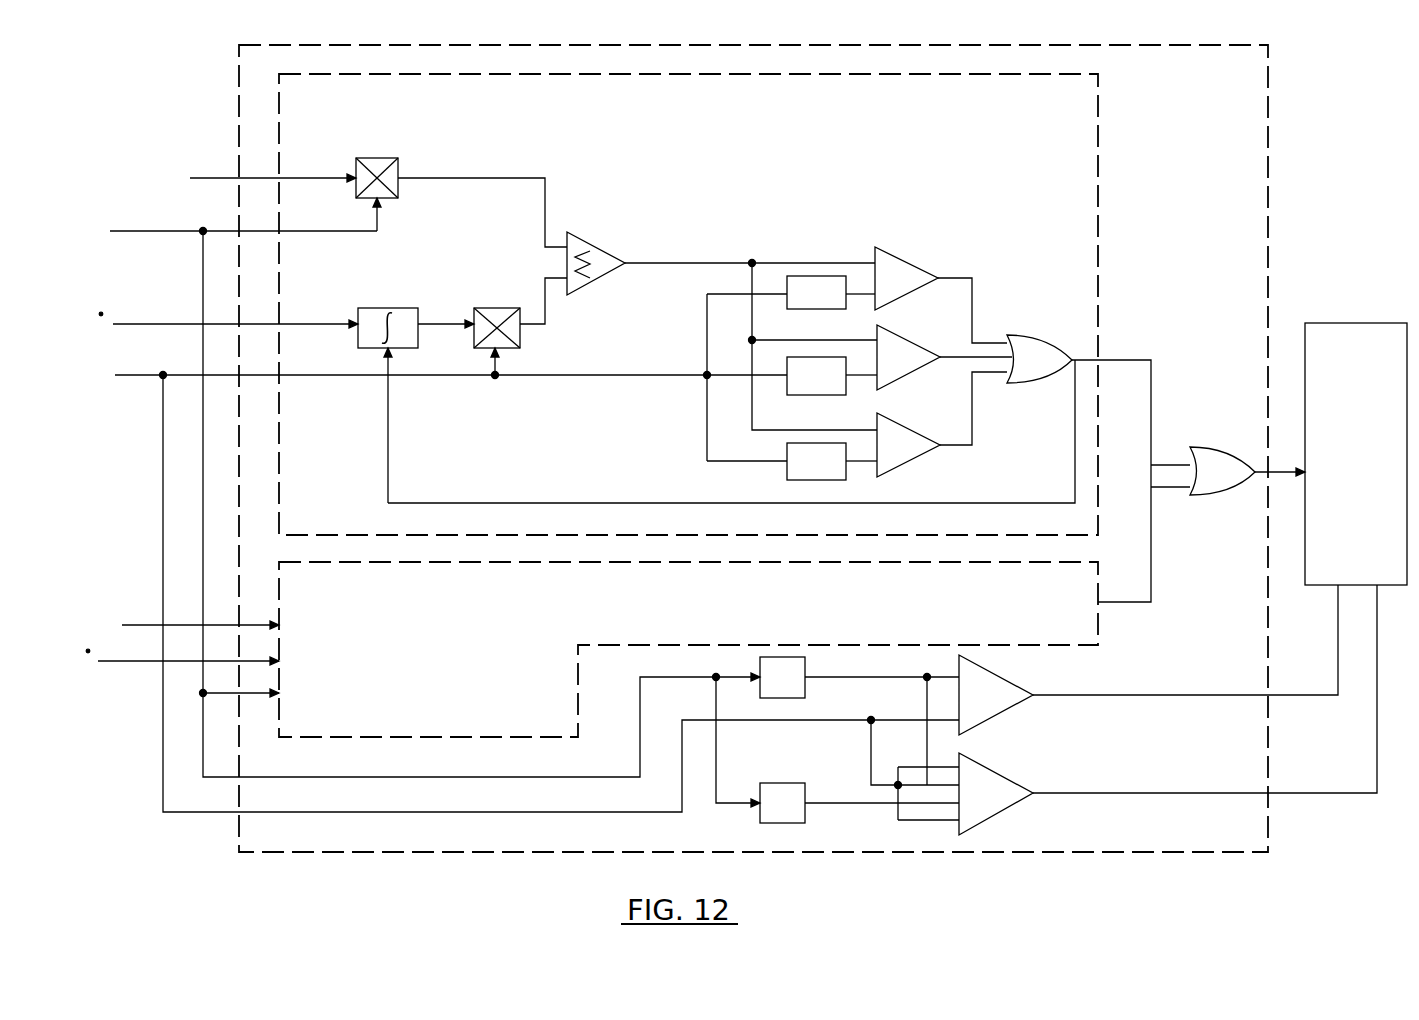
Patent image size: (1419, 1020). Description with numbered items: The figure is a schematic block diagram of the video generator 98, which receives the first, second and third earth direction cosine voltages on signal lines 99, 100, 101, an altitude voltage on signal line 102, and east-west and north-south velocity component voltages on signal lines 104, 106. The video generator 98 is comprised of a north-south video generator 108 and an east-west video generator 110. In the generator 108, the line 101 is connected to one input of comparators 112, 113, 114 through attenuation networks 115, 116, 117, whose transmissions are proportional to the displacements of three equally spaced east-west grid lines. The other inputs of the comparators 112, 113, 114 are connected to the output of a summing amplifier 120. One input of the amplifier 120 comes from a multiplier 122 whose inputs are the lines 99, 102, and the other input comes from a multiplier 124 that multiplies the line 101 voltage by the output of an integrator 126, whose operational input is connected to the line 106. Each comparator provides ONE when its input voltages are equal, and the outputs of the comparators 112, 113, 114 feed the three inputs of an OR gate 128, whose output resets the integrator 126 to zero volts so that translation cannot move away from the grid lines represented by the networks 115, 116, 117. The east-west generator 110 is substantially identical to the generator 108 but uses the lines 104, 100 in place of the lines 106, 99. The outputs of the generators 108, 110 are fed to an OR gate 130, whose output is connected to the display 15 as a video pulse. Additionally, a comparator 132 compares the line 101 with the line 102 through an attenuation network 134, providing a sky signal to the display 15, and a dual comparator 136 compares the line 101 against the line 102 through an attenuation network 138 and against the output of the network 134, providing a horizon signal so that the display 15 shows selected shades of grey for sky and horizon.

The display 15 is at (1370, 466).
The video generator 98 is at (1268, 233).
The signal line 99 is at (213, 180).
The signal line 100 is at (150, 598).
The signal line 101 is at (172, 374).
The signal line 102 is at (166, 230).
The signal line 104 is at (128, 661).
The signal line 106 is at (166, 322).
The north-south video generator 108 is at (1098, 118).
The east-west video generator 110 is at (1098, 615).
The comparator 112 is at (902, 257).
The comparator 113 is at (904, 333).
The comparator 114 is at (912, 425).
The attenuation network 115 is at (822, 311).
The attenuation network 116 is at (821, 397).
The attenuation network 117 is at (797, 480).
The summing amplifier 120 is at (588, 243).
The multiplier 122 is at (386, 158).
The multiplier 124 is at (500, 308).
The integrator 126 is at (386, 308).
The OR gate 128 is at (1055, 315).
The OR gate 130 is at (1195, 447).
The comparator 132 is at (1000, 700).
The attenuation network 134 is at (797, 686).
The dual comparator 136 is at (1000, 778).
The attenuation network 138 is at (797, 812).